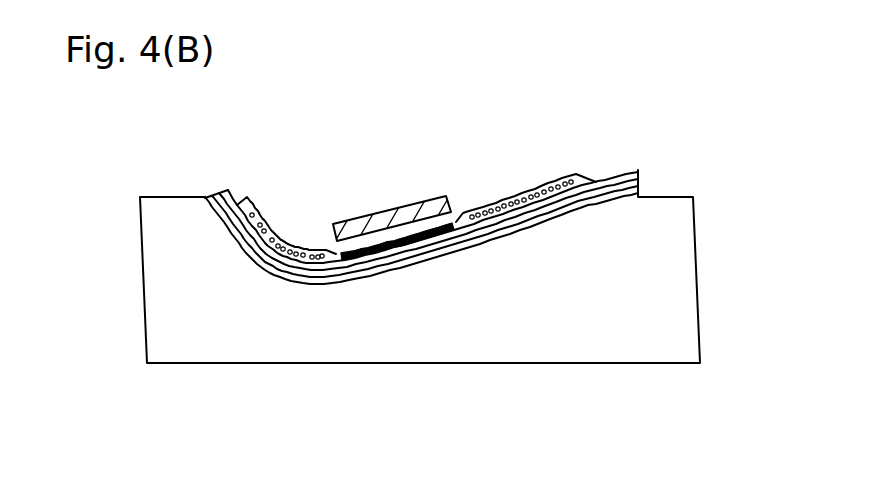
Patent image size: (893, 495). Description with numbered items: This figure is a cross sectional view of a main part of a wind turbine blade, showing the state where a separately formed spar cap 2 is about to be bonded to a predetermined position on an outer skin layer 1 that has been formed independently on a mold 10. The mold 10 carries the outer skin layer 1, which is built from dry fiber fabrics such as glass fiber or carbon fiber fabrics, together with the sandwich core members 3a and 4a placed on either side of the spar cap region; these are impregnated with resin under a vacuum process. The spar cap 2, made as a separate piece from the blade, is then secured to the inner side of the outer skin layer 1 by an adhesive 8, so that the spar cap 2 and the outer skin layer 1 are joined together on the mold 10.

The mold 10 is at (682, 290).
The outer skin layer 1 is at (424, 254).
The adhesive 8 is at (368, 247).
The spar cap 2 is at (410, 198).
The sandwich core member 3a is at (289, 248).
The sandwich core member 4a is at (537, 192).